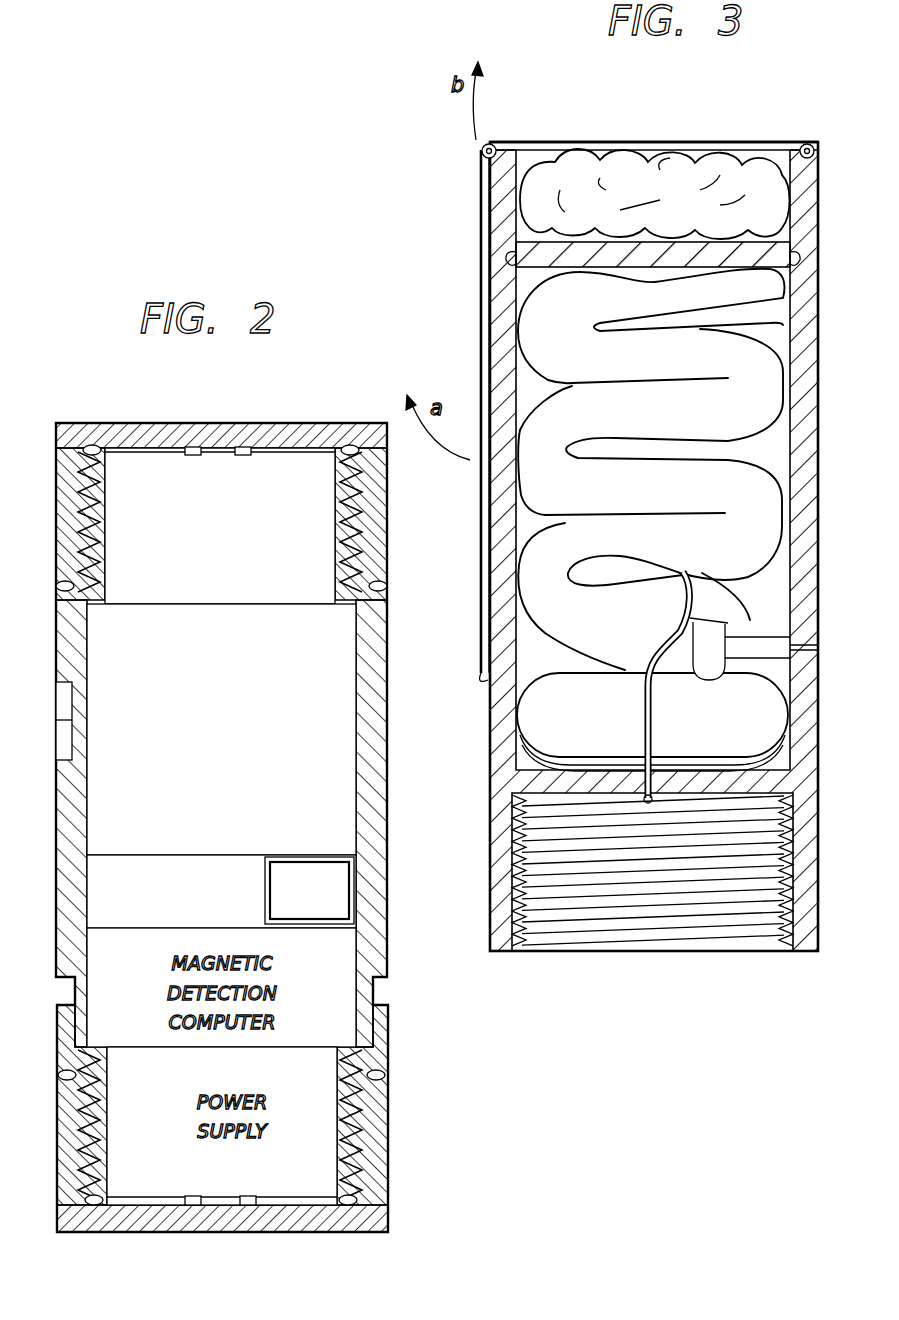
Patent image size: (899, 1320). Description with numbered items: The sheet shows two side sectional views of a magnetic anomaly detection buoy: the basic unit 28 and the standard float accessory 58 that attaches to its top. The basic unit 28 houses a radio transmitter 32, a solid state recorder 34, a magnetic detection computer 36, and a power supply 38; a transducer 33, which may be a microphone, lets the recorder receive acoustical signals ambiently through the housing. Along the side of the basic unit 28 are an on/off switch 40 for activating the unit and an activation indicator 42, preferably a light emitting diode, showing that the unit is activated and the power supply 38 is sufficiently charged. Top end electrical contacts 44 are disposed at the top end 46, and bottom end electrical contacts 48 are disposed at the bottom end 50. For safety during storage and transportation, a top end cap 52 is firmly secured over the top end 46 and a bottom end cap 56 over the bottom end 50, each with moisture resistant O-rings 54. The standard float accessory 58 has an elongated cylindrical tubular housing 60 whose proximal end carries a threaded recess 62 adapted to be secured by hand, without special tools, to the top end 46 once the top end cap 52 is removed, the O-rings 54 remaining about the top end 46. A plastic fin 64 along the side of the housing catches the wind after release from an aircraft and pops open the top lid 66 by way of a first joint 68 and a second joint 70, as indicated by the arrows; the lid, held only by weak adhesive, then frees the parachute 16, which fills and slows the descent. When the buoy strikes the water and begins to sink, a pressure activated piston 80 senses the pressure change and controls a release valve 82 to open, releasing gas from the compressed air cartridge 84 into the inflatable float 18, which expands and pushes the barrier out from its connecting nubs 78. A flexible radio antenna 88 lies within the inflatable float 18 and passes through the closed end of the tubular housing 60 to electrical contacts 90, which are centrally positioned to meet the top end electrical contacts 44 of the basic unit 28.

In FIG. 3, the parachute 16 is at (690, 175).
In FIG. 3, the inflatable float 18 is at (545, 338).
In FIG. 2, the basic unit 28 is at (404, 830).
In FIG. 2, the radio transmitter 32 is at (355, 750).
In FIG. 2, the transducer 33 is at (360, 905).
In FIG. 2, the solid state recorder 34 is at (120, 860).
In FIG. 2, the magnetic detection computer 36 is at (375, 983).
In FIG. 2, the power supply 38 is at (392, 1100).
In FIG. 2, the on/off switch 40 is at (62, 692).
In FIG. 2, the activation indicator 42 is at (62, 742).
In FIG. 2, the top end electrical contacts 44 is at (190, 455).
In FIG. 2, the top end 46 is at (300, 445).
In FIG. 2, the bottom end electrical contacts 48 is at (195, 1205).
In FIG. 2, the bottom end 50 is at (335, 1210).
In FIG. 2, the top end cap 52 is at (165, 435).
In FIG. 2, the O-rings 54 is at (118, 462).
In FIG. 2, the bottom end cap 56 is at (385, 1172).
In FIG. 3, the standard float accessory 58 is at (568, 118).
In FIG. 3, the tubular housing 60 is at (805, 430).
In FIG. 3, the threaded recess 62 is at (680, 925).
In FIG. 3, the fin 64 is at (483, 362).
In FIG. 3, the top lid 66 is at (635, 142).
In FIG. 3, the first joint 68 is at (482, 148).
In FIG. 3, the second joint 70 is at (810, 148).
In FIG. 3, the connecting nubs 78 is at (505, 258).
In FIG. 3, the pressure activated piston 80 is at (810, 645).
In FIG. 3, the release valve 82 is at (760, 650).
In FIG. 3, the compressed air cartridge 84 is at (732, 727).
In FIG. 3, the flexible radio antenna 88 is at (650, 700).
In FIG. 3, the electrical contacts 90 is at (645, 800).